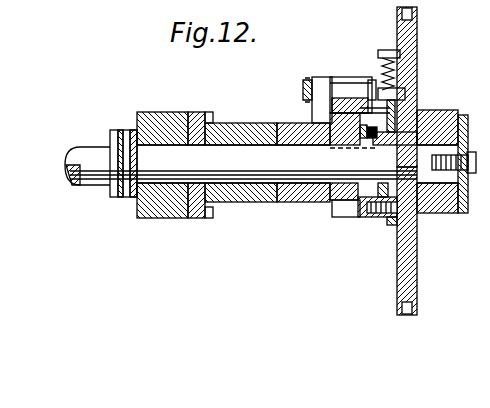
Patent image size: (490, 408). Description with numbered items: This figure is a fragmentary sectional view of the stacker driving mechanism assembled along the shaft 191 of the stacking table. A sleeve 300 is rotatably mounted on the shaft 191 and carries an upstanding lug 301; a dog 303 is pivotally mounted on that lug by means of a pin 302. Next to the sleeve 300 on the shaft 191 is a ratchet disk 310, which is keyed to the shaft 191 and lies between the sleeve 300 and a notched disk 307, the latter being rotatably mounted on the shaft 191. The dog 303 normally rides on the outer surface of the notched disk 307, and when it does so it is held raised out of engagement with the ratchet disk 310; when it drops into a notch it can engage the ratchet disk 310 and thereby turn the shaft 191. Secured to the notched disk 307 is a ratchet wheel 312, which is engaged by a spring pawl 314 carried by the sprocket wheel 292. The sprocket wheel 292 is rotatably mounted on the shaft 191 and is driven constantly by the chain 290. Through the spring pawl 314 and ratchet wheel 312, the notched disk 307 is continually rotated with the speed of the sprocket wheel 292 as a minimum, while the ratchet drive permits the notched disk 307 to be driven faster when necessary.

The shaft 191 is at (97, 187).
The chain 290 is at (418, 15).
The sprocket wheel 292 is at (410, 245).
The sleeve 300 is at (303, 196).
The upstanding lug 301 is at (318, 110).
The pin 302 is at (305, 86).
The dog 303 is at (344, 77).
The notched disk 307 is at (368, 218).
The ratchet disk 310 is at (340, 211).
The ratchet wheel 312 is at (392, 226).
The spring pawl 314 is at (418, 101).